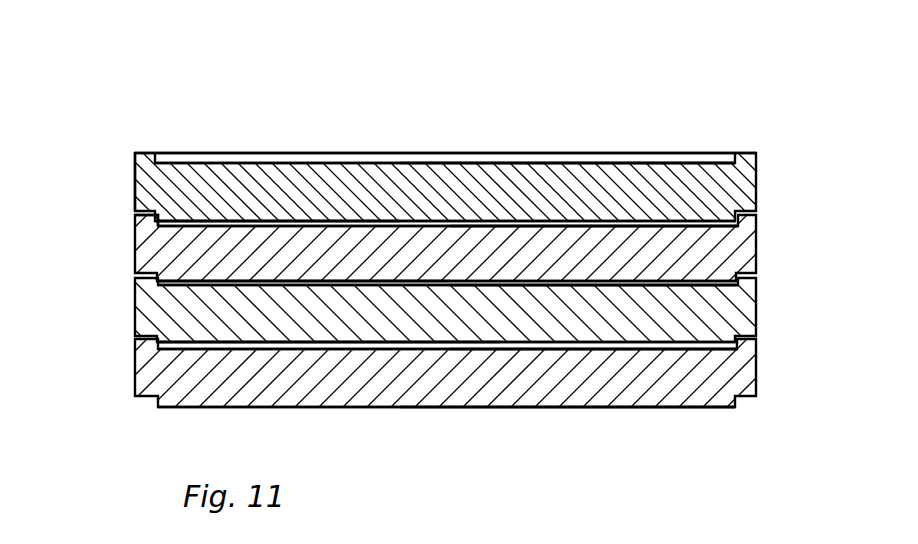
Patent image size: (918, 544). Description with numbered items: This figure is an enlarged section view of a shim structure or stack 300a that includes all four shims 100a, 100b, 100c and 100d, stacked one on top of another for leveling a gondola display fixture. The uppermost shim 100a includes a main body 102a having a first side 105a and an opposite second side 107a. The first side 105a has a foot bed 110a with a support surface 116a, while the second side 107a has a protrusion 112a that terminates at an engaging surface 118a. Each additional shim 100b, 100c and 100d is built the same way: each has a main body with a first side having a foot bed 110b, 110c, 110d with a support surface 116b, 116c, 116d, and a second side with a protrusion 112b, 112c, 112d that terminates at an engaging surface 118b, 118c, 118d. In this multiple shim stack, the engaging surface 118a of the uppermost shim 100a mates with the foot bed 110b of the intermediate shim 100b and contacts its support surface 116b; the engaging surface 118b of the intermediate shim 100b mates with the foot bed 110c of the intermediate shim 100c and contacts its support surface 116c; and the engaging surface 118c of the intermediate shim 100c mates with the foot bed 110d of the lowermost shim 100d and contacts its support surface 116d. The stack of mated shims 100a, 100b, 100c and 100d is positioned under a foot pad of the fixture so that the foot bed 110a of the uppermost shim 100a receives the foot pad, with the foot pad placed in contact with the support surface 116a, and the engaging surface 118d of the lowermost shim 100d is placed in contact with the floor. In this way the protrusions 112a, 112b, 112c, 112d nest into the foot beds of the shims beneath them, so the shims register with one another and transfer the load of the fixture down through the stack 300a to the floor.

The shim stack 300a is at (692, 82).
The uppermost shim 100a is at (757, 184).
The intermediate shim 100b is at (757, 247).
The intermediate shim 100c is at (757, 310).
The lowermost shim 100d is at (757, 358).
The main body 102a is at (135, 180).
The first side 105a is at (583, 153).
The second side 107a is at (145, 216).
The foot bed 110a is at (458, 163).
The foot bed 110b is at (380, 227).
The foot bed 110c is at (333, 287).
The foot bed 110d is at (190, 350).
The protrusion 112a is at (372, 222).
The protrusion 112b is at (301, 282).
The protrusion 112c is at (241, 342).
The protrusion 112d is at (615, 407).
The support surface 116a is at (526, 163).
The support surface 116b is at (660, 227).
The support surface 116c is at (690, 285).
The support surface 116d is at (655, 349).
The engaging surface 118a is at (235, 221).
The engaging surface 118b is at (269, 284).
The engaging surface 118c is at (493, 343).
The engaging surface 118d is at (562, 407).